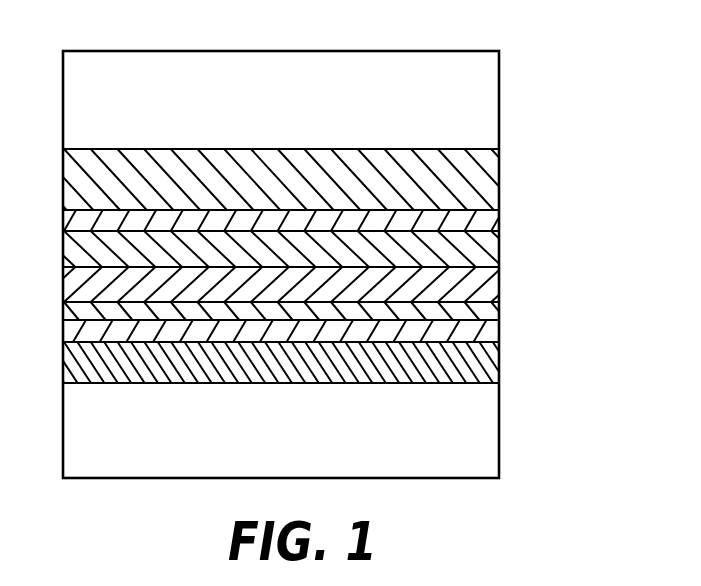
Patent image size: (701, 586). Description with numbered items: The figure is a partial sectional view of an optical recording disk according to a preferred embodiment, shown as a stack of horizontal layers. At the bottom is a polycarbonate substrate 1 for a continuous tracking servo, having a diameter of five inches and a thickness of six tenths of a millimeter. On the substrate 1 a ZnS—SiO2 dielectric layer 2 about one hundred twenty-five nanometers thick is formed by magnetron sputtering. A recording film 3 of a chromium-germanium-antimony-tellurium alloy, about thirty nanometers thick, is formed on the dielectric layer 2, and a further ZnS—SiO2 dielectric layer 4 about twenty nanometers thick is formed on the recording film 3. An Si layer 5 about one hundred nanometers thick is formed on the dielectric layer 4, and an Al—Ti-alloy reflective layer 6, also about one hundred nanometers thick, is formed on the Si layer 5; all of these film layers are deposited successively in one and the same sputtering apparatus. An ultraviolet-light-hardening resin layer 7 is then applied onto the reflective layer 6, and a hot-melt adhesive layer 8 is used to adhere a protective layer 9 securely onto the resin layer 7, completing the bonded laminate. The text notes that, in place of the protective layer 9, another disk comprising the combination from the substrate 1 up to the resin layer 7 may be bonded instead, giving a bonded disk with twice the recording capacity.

The polycarbonate substrate 1 is at (490, 415).
The ZnS—SiO2 dielectric layer 2 is at (488, 364).
The recording film 3 is at (488, 330).
The ZnS—SiO2 dielectric layer 4 is at (488, 310).
The Si layer 5 is at (488, 288).
The Al—Ti-alloy reflective layer 6 is at (488, 247).
The ultraviolet-light-hardening resin layer 7 is at (490, 220).
The hot-melt adhesive layer 8 is at (490, 180).
The protective layer 9 is at (490, 86).